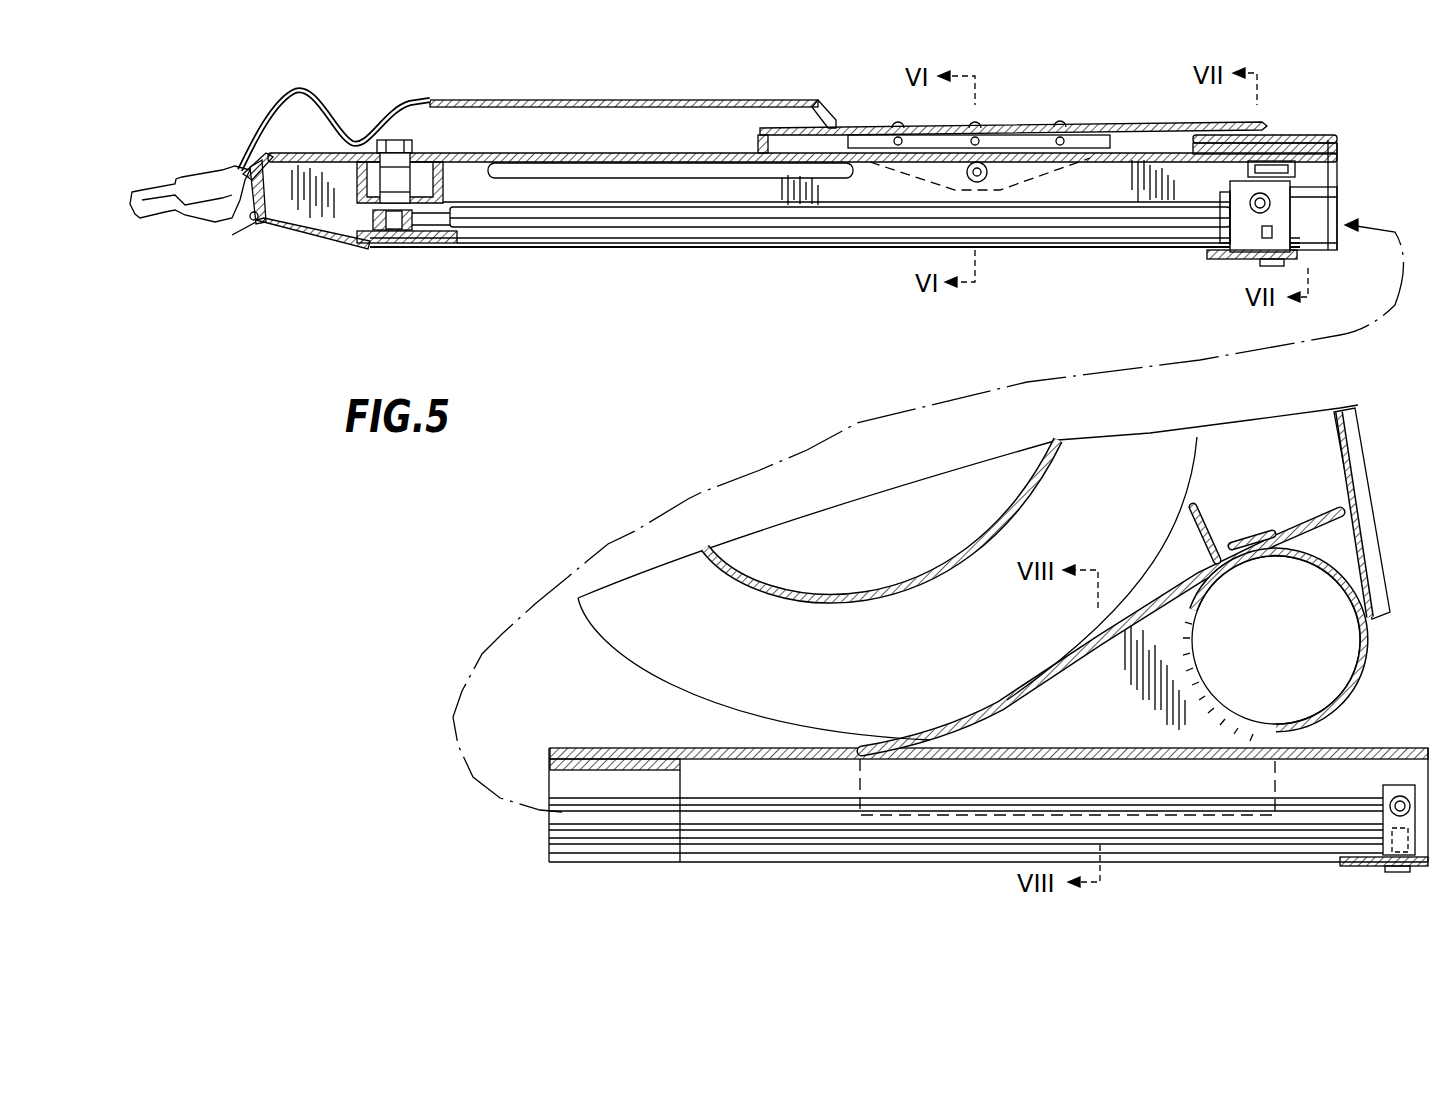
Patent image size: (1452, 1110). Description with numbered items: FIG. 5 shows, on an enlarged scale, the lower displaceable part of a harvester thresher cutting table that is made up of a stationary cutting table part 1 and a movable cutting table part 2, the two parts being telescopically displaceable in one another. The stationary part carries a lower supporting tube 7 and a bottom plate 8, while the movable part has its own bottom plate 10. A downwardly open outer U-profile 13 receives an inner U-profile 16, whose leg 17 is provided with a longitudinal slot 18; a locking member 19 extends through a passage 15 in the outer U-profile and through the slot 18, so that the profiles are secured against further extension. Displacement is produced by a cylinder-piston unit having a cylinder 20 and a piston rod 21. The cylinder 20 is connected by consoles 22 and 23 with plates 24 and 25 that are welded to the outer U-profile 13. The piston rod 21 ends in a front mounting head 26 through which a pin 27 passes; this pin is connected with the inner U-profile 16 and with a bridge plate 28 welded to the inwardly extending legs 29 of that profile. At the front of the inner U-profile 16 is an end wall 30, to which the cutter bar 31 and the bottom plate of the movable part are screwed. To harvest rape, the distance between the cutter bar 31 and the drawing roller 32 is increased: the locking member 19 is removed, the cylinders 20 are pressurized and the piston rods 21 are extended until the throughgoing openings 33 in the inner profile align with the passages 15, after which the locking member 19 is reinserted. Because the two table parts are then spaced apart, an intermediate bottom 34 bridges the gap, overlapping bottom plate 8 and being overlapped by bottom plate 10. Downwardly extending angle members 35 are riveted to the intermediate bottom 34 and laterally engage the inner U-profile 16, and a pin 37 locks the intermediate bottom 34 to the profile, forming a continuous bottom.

The stationary cutting table part 1 is at (863, 512).
The movable cutting table part 2 is at (637, 97).
The lower supporting tube 7 is at (1370, 612).
The bottom plate 8 is at (1337, 145).
The bottom plate 10 is at (500, 98).
The outer U-profile 13 is at (1338, 142).
The passage 15 is at (1322, 135).
The inner U-profile 16 is at (565, 153).
The leg 17 is at (632, 195).
The longitudinal slot 18 is at (695, 170).
The locking member 19 is at (1270, 160).
The cylinder 20 is at (1322, 232).
The piston rod 21 is at (1075, 210).
The console 22 is at (1400, 790).
The console 23 is at (1250, 230).
The plate 24 is at (1345, 860).
The plate 25 is at (1262, 266).
The front mounting head 26 is at (393, 244).
The pin 27 is at (430, 158).
The bridge plate 28 is at (372, 244).
The inwardly extending legs 29 is at (500, 246).
The end wall 30 is at (262, 222).
The cutter bar 31 is at (225, 150).
The drawing roller 32 is at (915, 646).
The throughgoing opening 33 is at (1245, 172).
The intermediate bottom 34 is at (1137, 128).
The angle member 35 is at (1040, 165).
The pin 37 is at (985, 162).